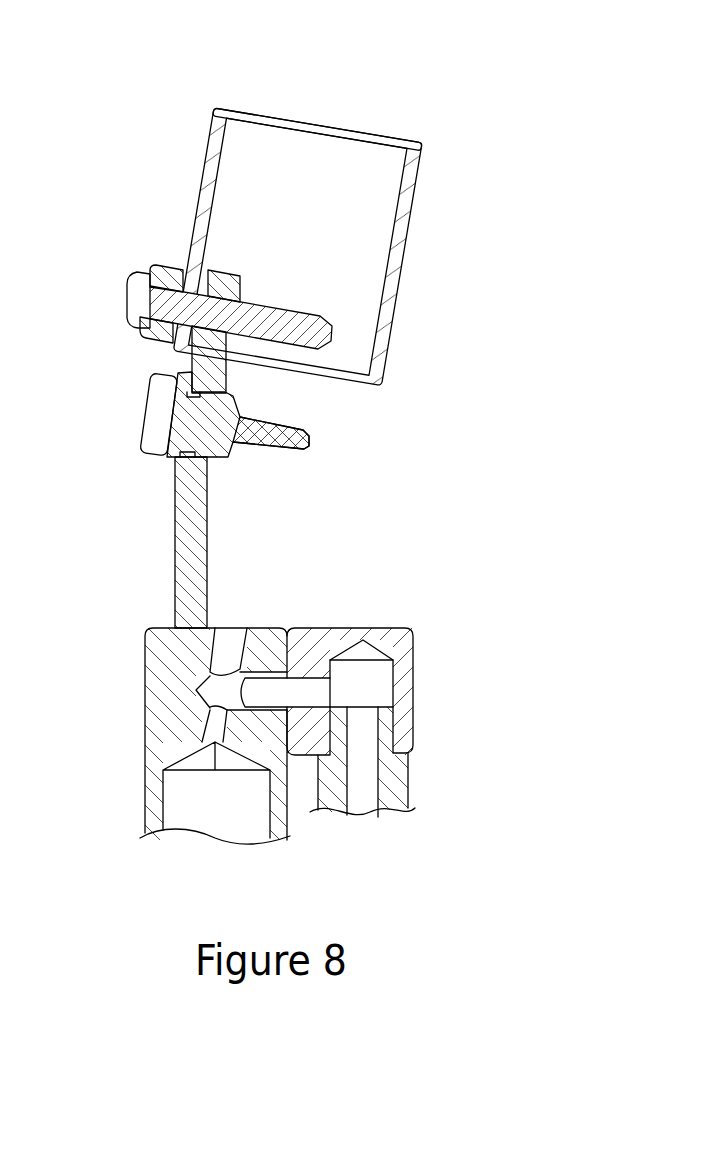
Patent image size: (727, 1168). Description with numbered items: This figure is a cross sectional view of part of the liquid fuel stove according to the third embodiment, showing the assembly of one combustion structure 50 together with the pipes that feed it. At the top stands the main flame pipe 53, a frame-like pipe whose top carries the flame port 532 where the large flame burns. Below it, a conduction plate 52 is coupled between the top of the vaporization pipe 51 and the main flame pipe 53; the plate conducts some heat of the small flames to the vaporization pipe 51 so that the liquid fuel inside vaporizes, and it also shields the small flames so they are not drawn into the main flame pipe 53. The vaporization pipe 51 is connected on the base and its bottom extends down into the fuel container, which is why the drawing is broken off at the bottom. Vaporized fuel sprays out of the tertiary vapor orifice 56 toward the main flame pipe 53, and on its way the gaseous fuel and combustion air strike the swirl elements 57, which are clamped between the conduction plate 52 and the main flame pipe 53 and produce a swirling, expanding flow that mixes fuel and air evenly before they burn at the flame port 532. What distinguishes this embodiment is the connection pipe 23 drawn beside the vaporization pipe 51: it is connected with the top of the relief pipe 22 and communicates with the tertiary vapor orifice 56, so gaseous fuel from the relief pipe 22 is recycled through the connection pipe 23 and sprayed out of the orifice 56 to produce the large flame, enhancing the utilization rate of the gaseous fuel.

The combustion structure 50 is at (440, 370).
The main flame pipe 53 is at (420, 187).
The flame port 532 is at (242, 107).
The swirl element 57 is at (300, 313).
The conduction plate 52 is at (183, 533).
The vaporization pipe 51 is at (160, 697).
The tertiary vapor orifice 56 is at (236, 640).
The connection pipe 23 is at (412, 652).
The relief pipe 22 is at (408, 781).